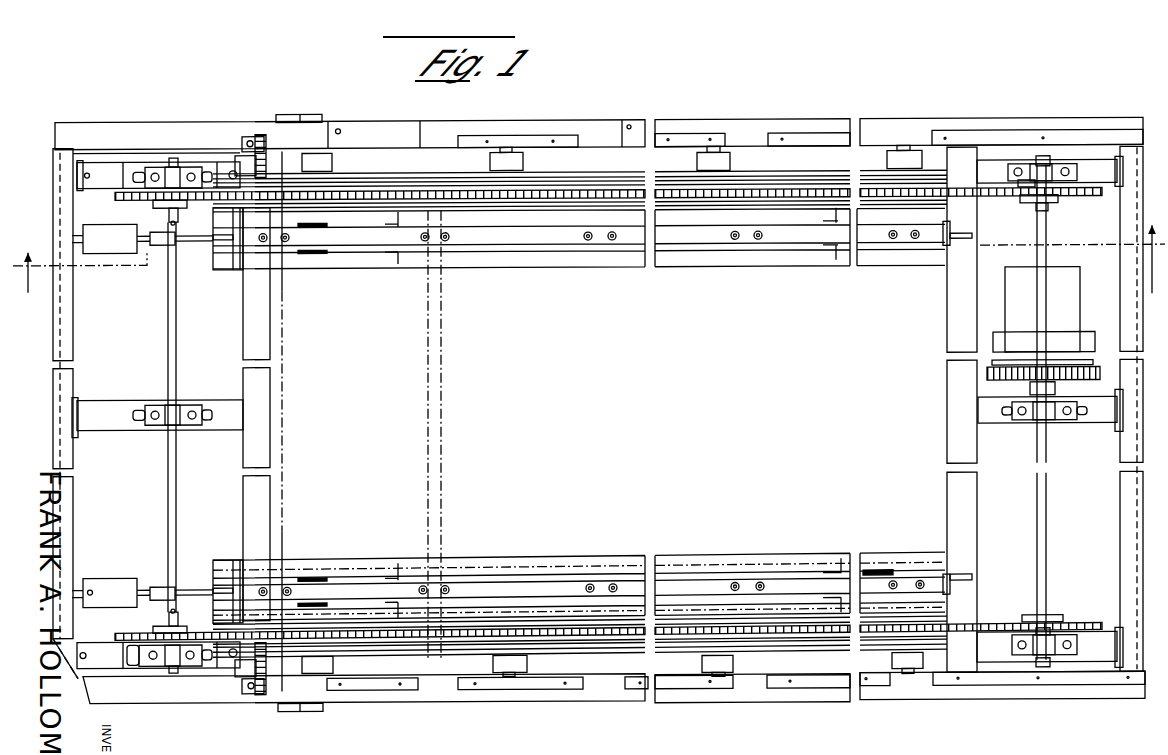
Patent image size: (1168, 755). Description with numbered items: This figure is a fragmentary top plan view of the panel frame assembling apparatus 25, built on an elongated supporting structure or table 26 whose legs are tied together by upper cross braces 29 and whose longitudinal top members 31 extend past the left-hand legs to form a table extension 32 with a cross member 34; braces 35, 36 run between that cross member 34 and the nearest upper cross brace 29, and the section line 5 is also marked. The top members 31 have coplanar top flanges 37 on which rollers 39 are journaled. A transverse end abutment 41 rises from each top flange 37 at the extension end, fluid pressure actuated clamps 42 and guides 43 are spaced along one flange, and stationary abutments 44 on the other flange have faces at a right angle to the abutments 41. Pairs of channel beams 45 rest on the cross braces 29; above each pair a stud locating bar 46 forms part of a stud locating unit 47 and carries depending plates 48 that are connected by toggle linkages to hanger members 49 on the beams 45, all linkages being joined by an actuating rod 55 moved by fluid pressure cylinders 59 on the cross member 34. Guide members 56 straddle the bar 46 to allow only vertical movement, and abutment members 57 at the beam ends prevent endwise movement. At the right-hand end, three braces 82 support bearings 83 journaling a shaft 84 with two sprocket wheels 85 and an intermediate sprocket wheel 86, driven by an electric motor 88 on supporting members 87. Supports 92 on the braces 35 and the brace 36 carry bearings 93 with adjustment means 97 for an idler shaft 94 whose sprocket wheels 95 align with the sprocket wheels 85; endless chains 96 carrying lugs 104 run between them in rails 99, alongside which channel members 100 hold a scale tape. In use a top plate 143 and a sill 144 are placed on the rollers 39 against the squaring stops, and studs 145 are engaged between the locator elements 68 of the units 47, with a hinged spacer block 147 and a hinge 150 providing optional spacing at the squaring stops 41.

The section line 5- 5 is at (589, 268).
The panel frame assembling apparatus 25 is at (757, 110).
The supporting structure or table 26 is at (475, 701).
The upper cross braces 29 is at (271, 504).
The longitudinal top members 31 is at (598, 132).
The table extension 32 is at (112, 116).
The cross member 34 is at (66, 538).
The braces 35 is at (90, 186).
The brace 36 is at (125, 430).
The top flanges 37 is at (681, 130).
The rollers 39 is at (490, 163).
The transverse or end abutment 41 is at (270, 131).
The fluid pressure actuated clamps 42 is at (381, 122).
The guides 43 is at (528, 136).
The stationary abutments 44 is at (365, 689).
The beams 45 is at (540, 222).
The stud locating bar 46 is at (800, 244).
The stud locating unit 47 is at (695, 240).
The plates 48 is at (890, 578).
The hanger members 49 is at (877, 572).
The actuating rod 55 is at (193, 243).
The guide members 56 is at (393, 232).
The abutment members 57 is at (233, 250).
The fluid pressure cylinders 59 is at (95, 251).
The locator pins or elements 68 is at (285, 242).
The braces 82 is at (1093, 160).
The bearing 83 is at (1037, 160).
The shaft 84 is at (1046, 566).
The sprocket wheels 85 is at (1025, 206).
The intermediate sprocket wheel 86 is at (1030, 385).
The supporting members 87 is at (997, 282).
The electric motor 88 is at (1057, 318).
The supports 92 is at (140, 664).
The bearings 93 is at (181, 403).
The idler shaft 94 is at (177, 508).
The sprocket wheels 95 is at (150, 201).
The endless chains 96 is at (1018, 200).
The adjustment means 97 is at (203, 420).
The rail 99 is at (375, 190).
The member of channel shape cross section 100 is at (770, 180).
The lugs 104 is at (1045, 202).
The frame member or top plate 143 is at (583, 157).
The sill member 144 is at (598, 660).
The studs 145 is at (284, 447).
The spacer block 147 is at (248, 158).
The hinge 150 is at (299, 111).